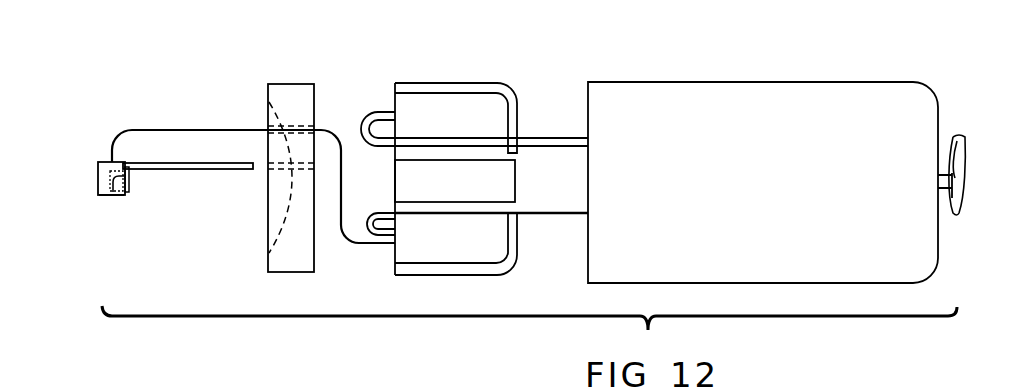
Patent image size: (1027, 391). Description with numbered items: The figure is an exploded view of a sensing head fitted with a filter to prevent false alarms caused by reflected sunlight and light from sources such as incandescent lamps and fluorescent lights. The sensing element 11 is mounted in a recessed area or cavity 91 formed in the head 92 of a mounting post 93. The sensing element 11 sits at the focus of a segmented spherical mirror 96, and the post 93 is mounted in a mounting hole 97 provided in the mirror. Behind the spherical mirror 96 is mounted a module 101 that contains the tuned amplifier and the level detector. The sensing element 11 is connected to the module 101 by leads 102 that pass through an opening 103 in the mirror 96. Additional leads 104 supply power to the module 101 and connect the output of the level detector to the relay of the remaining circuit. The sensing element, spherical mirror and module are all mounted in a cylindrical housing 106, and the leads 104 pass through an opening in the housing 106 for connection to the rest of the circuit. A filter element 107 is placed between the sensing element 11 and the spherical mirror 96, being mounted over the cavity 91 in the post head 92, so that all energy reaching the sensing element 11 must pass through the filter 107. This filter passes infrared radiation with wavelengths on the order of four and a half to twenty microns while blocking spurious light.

The sensing element 11 is at (107, 182).
The cavity 91 is at (130, 177).
The head 92 is at (100, 162).
The mounting post 93 is at (253, 170).
The segmented spherical mirror 96 is at (263, 258).
The mounting hole 97 is at (280, 163).
The module 101 is at (470, 253).
The leads 102 is at (183, 128).
The opening 103 is at (307, 113).
The additional leads 104 is at (543, 147).
The cylindrical housing 106 is at (757, 260).
The filter element 107 is at (128, 177).